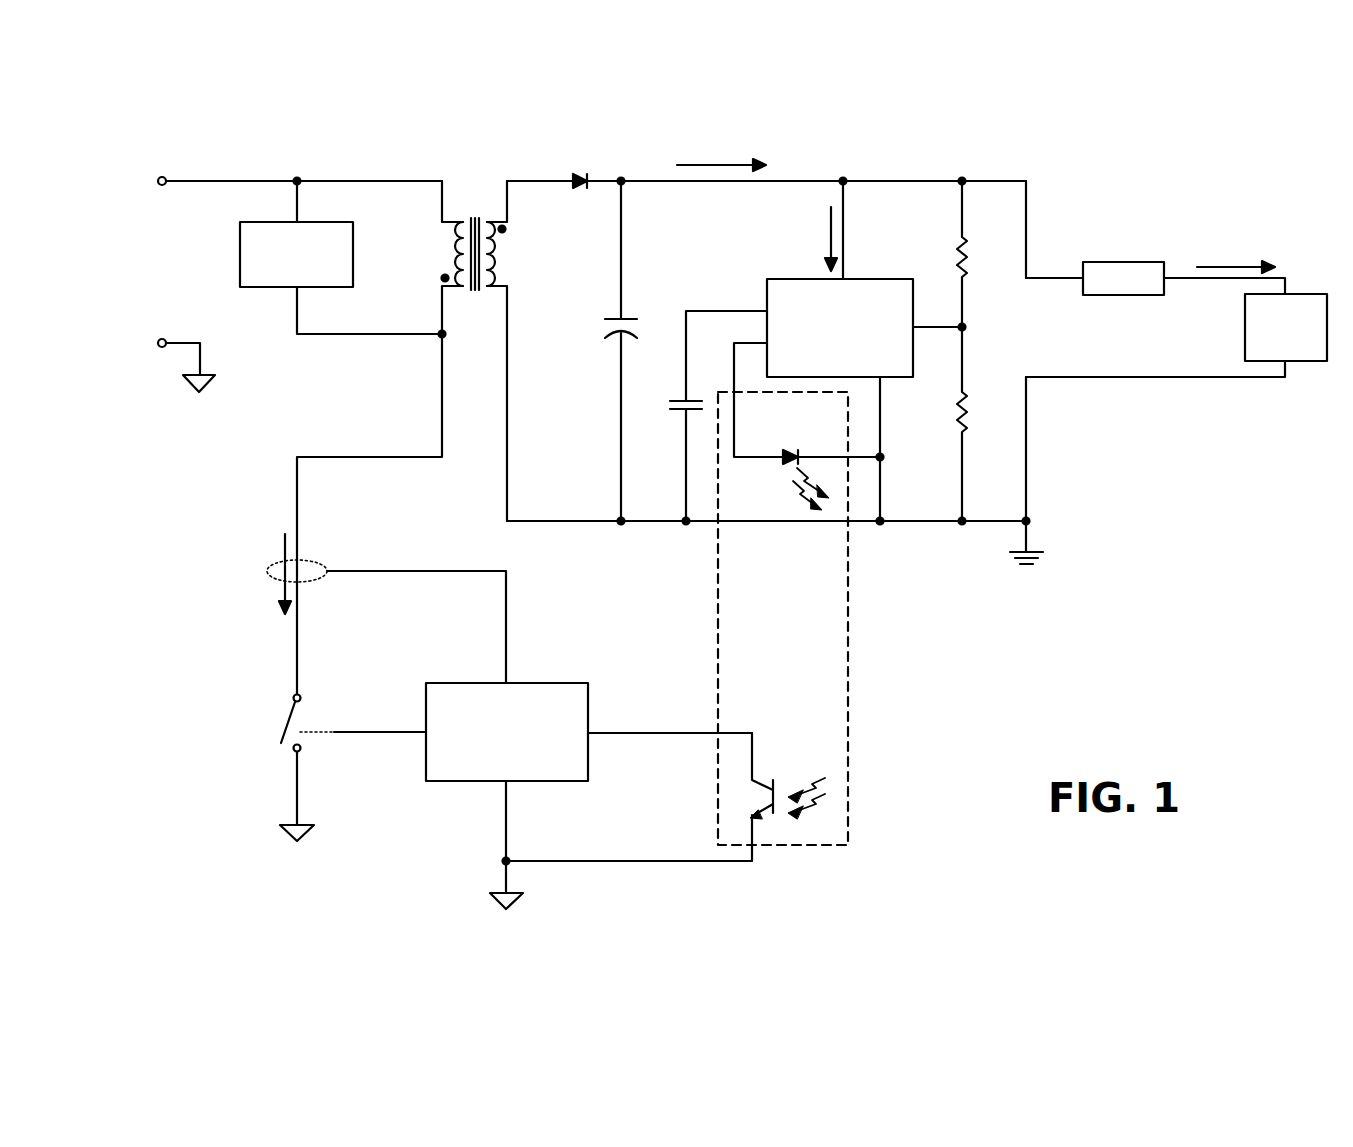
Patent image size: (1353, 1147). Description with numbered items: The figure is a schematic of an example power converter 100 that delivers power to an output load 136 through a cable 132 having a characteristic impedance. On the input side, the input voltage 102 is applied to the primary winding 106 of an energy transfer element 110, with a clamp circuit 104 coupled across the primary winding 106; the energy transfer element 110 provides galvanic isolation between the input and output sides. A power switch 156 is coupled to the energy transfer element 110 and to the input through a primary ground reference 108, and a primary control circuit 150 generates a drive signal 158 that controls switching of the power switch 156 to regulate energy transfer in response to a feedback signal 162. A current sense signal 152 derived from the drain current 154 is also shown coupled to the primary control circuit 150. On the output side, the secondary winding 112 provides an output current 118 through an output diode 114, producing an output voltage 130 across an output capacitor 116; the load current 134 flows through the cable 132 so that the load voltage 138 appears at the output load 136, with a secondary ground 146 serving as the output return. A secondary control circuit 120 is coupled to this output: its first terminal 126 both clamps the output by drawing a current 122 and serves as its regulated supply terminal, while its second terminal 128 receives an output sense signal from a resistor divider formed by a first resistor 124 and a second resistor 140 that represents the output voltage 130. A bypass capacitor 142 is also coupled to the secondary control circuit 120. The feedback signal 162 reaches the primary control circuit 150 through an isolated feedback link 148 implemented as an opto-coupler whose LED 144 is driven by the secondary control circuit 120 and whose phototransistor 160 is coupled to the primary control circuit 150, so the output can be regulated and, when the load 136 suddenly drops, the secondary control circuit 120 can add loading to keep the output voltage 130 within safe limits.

The power converter 100 is at (1127, 724).
The input voltage VIN 102 is at (153, 236).
The clamp circuit 104 is at (270, 291).
The primary winding 106 is at (441, 263).
The primary ground reference 108 is at (217, 393).
The energy transfer element 110 is at (433, 432).
The secondary winding 112 is at (510, 268).
The output diode D1 114 is at (578, 194).
The output capacitor C1 116 is at (605, 337).
The output current IO 118 is at (698, 153).
The secondary control circuit 120 is at (780, 270).
The current IS 122 is at (823, 221).
The resistor R1 124 is at (951, 246).
The first terminal 126 is at (850, 276).
The second terminal 128 is at (971, 327).
The output voltage VO 130 is at (1036, 330).
The cable 132 is at (1109, 259).
The load current ILOAD 134 is at (1199, 258).
The output load 136 is at (1270, 354).
The load voltage VLOAD 138 is at (1153, 329).
The resistor R2 140 is at (951, 404).
The bypass capacitor C2 142 is at (673, 417).
The LED 144 is at (795, 446).
The output return / secondary ground 146 is at (1043, 559).
The feedback link 148 is at (818, 602).
The primary control circuit 150 is at (555, 676).
The current sense signal ISENSE 152 is at (518, 603).
The drain current ID 154 is at (269, 592).
The power switch S1 156 is at (305, 712).
The drive signal 158 is at (412, 738).
The phototransistor 160 is at (765, 765).
The feedback signal 162 is at (605, 738).